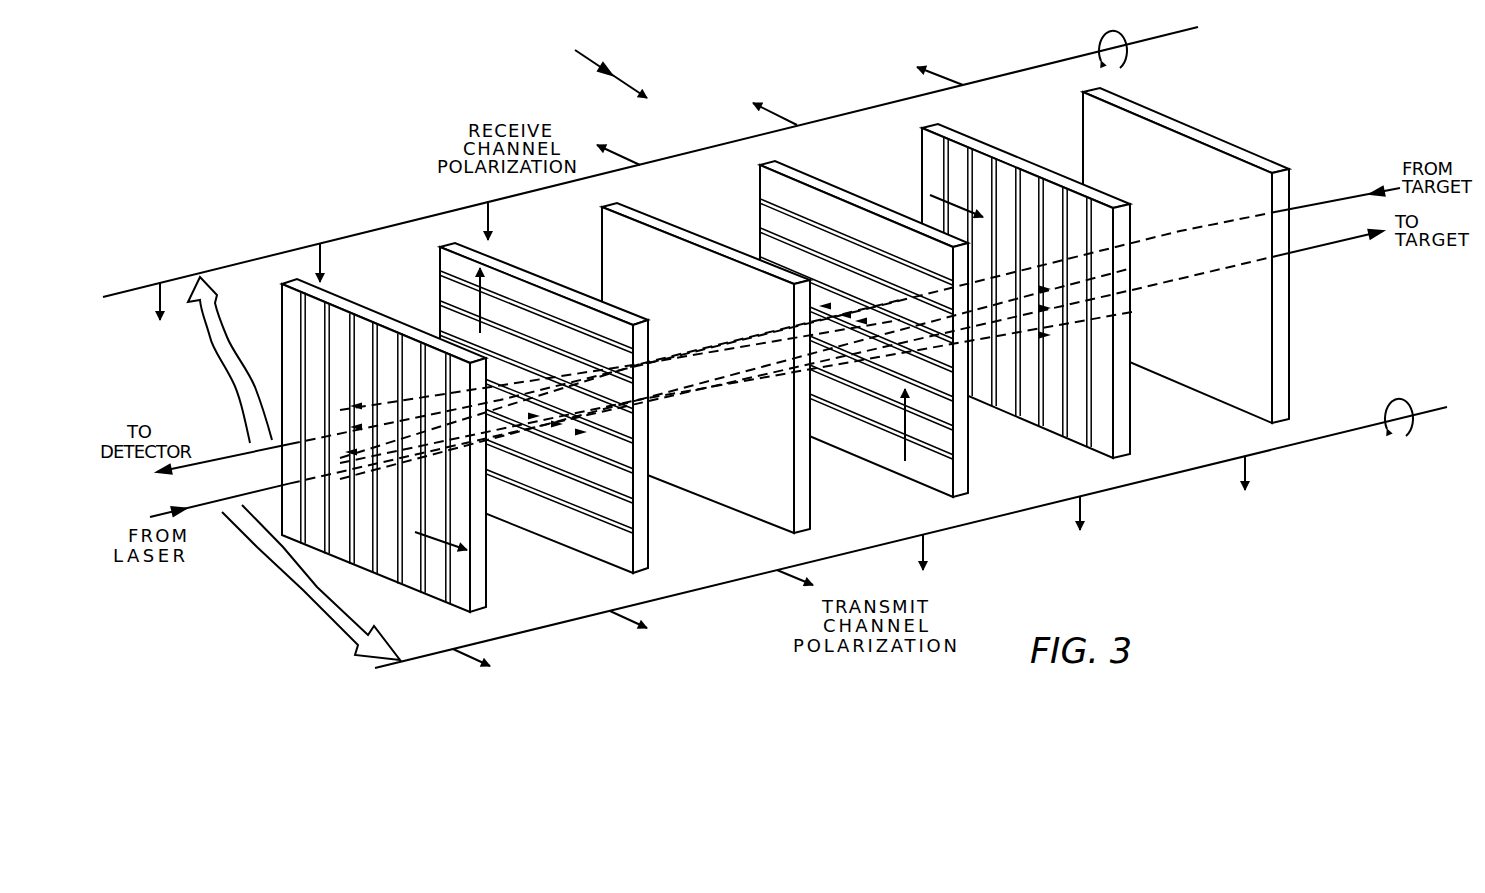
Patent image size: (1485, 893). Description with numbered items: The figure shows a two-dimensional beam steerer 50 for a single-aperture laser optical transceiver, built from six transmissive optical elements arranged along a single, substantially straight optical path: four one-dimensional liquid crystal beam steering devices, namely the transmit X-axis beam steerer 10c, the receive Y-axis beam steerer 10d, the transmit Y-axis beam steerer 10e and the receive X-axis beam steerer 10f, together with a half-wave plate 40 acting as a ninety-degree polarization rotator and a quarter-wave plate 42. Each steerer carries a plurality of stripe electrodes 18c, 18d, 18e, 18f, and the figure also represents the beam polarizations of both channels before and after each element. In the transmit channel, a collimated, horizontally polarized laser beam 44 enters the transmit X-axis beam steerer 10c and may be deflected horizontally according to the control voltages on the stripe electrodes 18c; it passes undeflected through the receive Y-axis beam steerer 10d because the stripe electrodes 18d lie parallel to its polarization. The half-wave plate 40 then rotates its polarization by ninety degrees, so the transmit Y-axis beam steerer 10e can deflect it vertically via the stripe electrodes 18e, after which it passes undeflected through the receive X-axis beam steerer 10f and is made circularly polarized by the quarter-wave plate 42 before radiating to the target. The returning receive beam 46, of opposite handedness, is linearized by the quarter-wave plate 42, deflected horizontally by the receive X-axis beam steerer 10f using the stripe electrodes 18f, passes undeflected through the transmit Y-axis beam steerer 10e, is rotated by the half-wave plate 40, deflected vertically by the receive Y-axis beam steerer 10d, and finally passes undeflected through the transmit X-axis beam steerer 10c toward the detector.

The transmit X-axis beam steerer 10c is at (484, 597).
The receive Y-axis beam steerer 10d is at (645, 558).
The transmit Y-axis beam steerer 10e is at (968, 483).
The receive X-axis beam steerer 10f is at (1132, 443).
The stripe electrodes 18c is at (460, 598).
The stripe electrodes 18d is at (602, 542).
The stripe electrodes 18e is at (942, 452).
The stripe electrodes 18f is at (1105, 434).
The half-wave plate 40 is at (808, 514).
The quarter-wave plate 42 is at (1290, 398).
The transmit beam 44 is at (212, 503).
The receive beam 46 is at (218, 458).
The beam steerer 50 is at (595, 64).